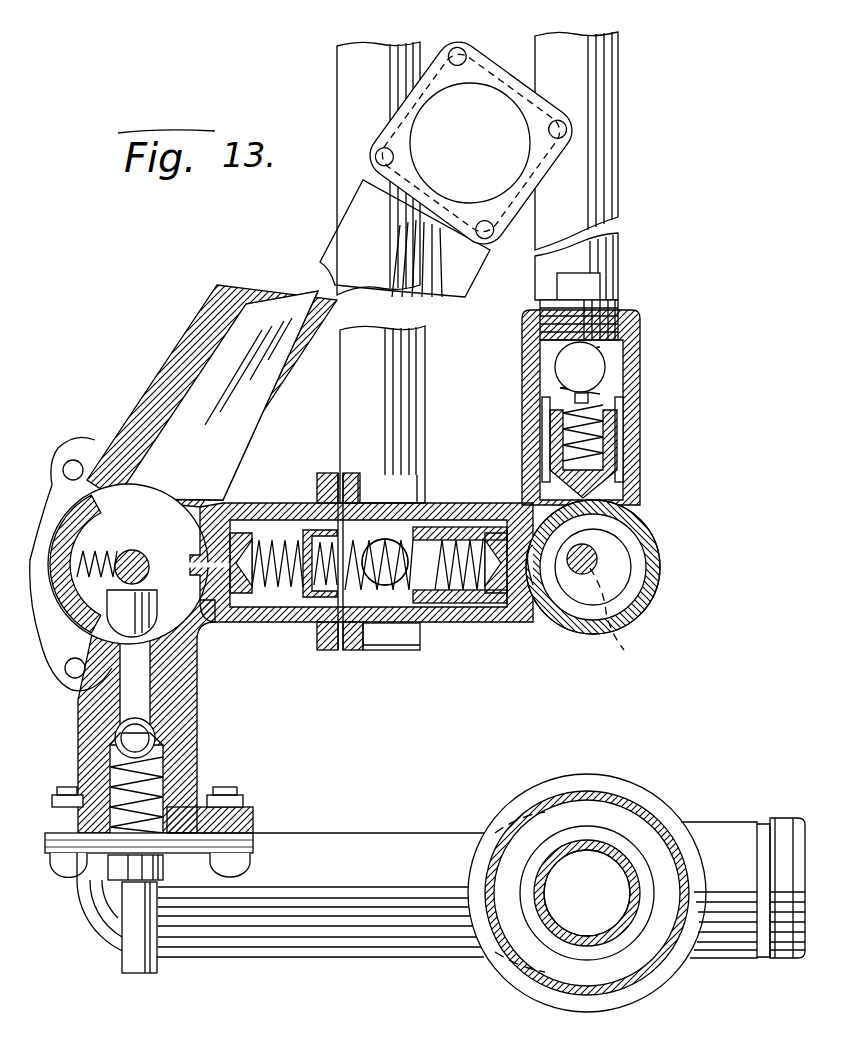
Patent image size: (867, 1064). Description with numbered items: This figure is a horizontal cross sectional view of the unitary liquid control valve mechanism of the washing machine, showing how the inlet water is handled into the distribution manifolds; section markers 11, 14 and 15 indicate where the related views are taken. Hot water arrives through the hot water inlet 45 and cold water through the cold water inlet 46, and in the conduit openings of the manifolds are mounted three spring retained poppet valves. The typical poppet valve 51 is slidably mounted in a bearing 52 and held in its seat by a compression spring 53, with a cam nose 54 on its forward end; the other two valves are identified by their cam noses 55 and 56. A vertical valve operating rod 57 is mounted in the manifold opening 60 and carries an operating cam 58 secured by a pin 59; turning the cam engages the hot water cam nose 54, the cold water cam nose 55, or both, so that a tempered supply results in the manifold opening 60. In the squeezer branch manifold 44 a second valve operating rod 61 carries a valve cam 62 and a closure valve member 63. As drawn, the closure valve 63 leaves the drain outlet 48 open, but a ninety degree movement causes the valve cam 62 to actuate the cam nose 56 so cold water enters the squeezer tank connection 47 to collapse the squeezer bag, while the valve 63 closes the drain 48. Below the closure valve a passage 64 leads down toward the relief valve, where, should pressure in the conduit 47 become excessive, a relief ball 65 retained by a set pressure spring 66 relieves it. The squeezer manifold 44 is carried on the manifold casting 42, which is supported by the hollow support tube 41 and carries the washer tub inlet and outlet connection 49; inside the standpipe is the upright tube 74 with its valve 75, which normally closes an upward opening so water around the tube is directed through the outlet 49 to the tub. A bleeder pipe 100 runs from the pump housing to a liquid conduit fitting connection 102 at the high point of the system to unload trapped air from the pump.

The section line 11- 11 is at (57, 888).
The section line 14- 14 is at (580, 36).
The section line 15- 15 is at (150, 300).
The hollow support tube 41 is at (528, 812).
The manifold casting 42 is at (504, 1001).
The squeezer branch manifold 44 is at (75, 750).
The hot water inlet 45 is at (626, 268).
The cold water inlet 46 is at (425, 386).
The squeezer tank in and out connection 47 is at (420, 178).
The drain outlet 48 is at (250, 950).
The washer tub inlet and outlet connection 49 is at (714, 838).
The poppet valve 51 is at (614, 456).
The bearing 52 is at (618, 418).
The compression spring 53 is at (604, 376).
The cam nose 54 is at (610, 510).
The cam nose 55 is at (546, 550).
The cam nose 56 is at (190, 568).
The valve operating rod 57 is at (596, 553).
The operating cam 58 is at (636, 578).
The pin 59 is at (621, 617).
The manifold opening 60 is at (560, 612).
The valve operating rod 61 is at (142, 553).
The valve cam 62 is at (150, 620).
The closure valve member 63 is at (96, 522).
The bore 64 is at (155, 672).
The ball 65 is at (152, 746).
The set pressure spring 66 is at (165, 797).
The upright tube 74 is at (612, 855).
The valve 75 is at (620, 945).
The bleeder pipe 100 is at (157, 895).
The liquid conduit fitting connection 102 is at (160, 868).